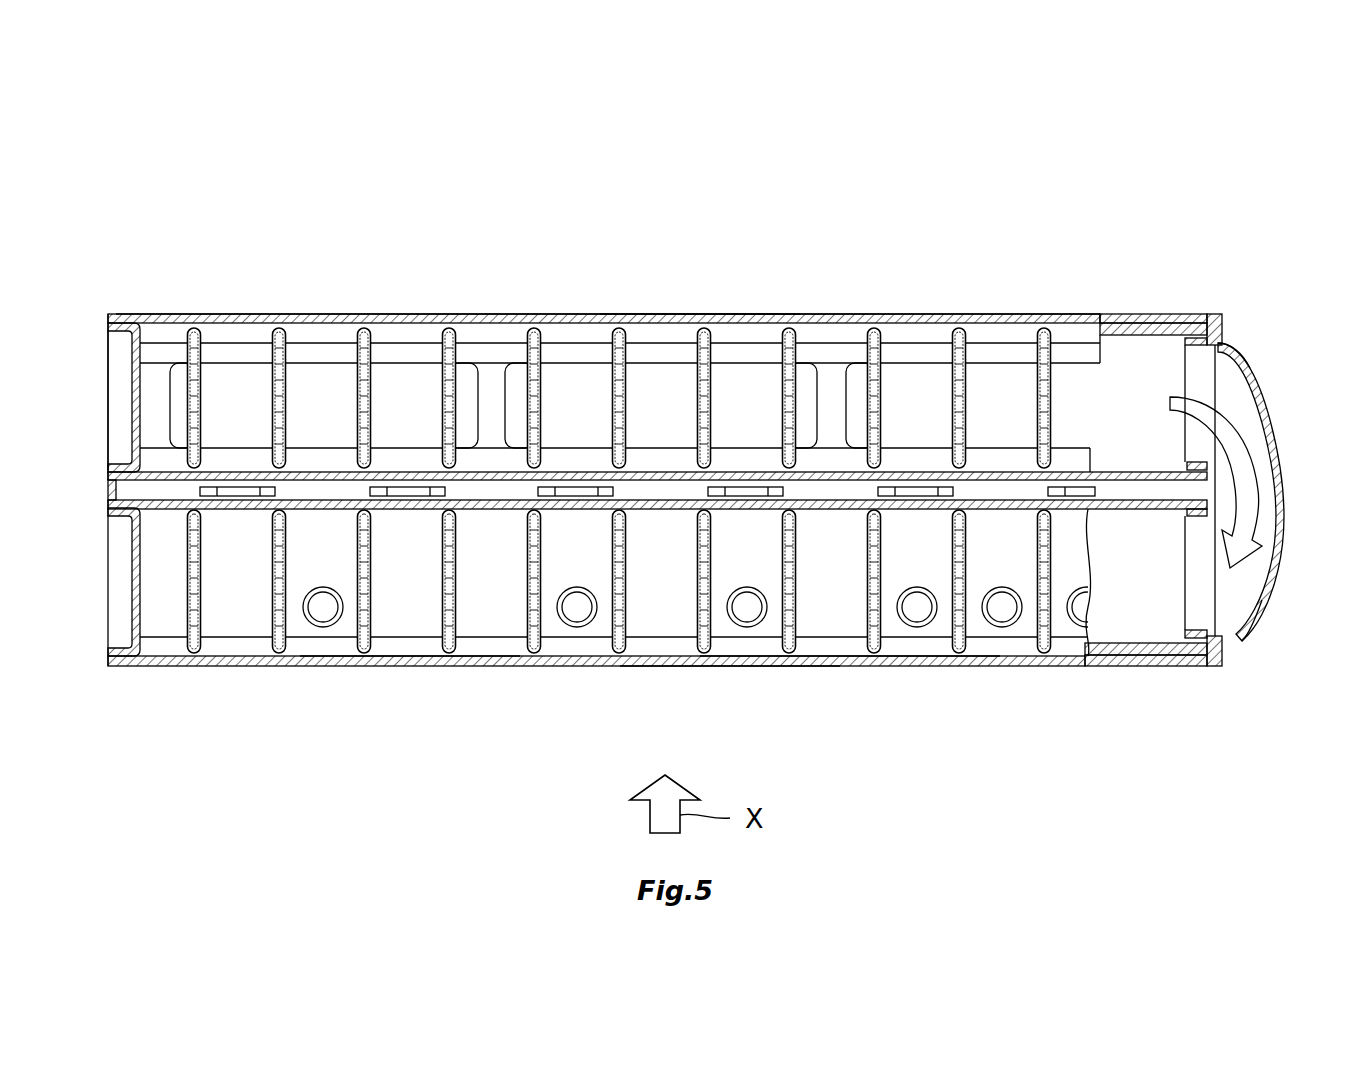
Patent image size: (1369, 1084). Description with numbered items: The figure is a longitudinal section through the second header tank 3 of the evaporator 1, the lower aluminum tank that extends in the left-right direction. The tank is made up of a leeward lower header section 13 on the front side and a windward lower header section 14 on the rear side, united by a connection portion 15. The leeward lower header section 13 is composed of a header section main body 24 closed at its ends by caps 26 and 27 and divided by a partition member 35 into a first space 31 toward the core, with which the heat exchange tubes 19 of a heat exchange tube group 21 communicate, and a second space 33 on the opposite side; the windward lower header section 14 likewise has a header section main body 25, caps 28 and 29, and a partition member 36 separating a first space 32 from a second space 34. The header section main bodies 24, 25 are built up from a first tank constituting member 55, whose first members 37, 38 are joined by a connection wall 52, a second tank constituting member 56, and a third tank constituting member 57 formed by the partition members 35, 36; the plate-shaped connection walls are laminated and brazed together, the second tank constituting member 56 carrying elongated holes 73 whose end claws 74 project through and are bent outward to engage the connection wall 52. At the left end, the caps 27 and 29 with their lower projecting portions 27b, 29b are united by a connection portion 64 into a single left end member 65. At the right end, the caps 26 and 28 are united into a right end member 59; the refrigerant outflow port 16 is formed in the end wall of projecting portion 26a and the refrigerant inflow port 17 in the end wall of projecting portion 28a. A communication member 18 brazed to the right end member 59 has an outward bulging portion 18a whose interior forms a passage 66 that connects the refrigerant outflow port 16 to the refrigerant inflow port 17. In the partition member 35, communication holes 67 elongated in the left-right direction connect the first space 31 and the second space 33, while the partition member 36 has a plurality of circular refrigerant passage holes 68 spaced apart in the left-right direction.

The evaporator 1 is at (1147, 188).
The second header tank 3 is at (666, 258).
The leeward lower header section 13 is at (418, 316).
The windward lower header section 14 is at (505, 668).
The connection portion 15 is at (505, 497).
The refrigerant outflow port 16 is at (1222, 352).
The refrigerant inflow port 17 is at (1222, 632).
The communication member 18 is at (1228, 668).
The outward bulging portion 18a is at (1278, 546).
The heat exchange tubes 19 is at (966, 368).
The heat exchange tube group 21 is at (190, 408).
The header section main body 24 is at (720, 318).
The header section main body 25 is at (732, 668).
The cap 26 is at (1205, 320).
The projecting portion 26a is at (1174, 348).
The cap 27 is at (109, 352).
The lower projecting portion 27b is at (145, 345).
The cap 28 is at (1213, 668).
The projecting portion 28a is at (1184, 652).
The cap 29 is at (108, 625).
The lower projecting portion 29b is at (145, 630).
The first space 31 is at (331, 328).
The first space 32 is at (410, 652).
The second space 33 is at (1130, 340).
The second space 34 is at (1095, 656).
The partition member 35 is at (486, 366).
The partition member 36 is at (660, 606).
The first member 37 is at (786, 332).
The first member 38 is at (811, 660).
The connection wall 52 is at (1000, 490).
The first tank constituting member 55 is at (282, 316).
The second tank constituting member 56 is at (1112, 472).
The third tank constituting member 57 is at (850, 360).
The right end member 59 is at (1212, 316).
The connection portion 64 is at (110, 490).
The left end member 65 is at (112, 316).
The passage 66 is at (1262, 477).
The communication holes 67 is at (573, 372).
The circular refrigerant passage holes 68 is at (321, 612).
The elongated holes 73 is at (585, 490).
The claws 74 is at (437, 490).